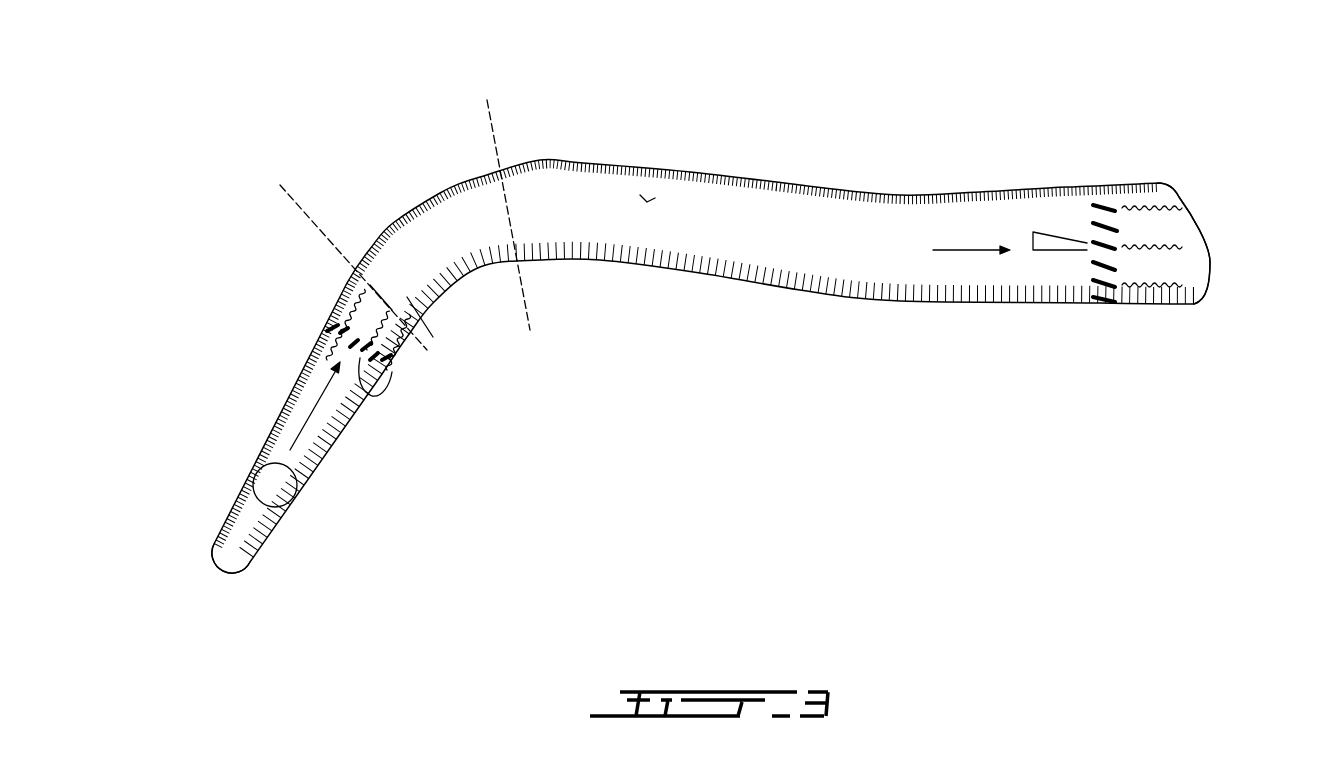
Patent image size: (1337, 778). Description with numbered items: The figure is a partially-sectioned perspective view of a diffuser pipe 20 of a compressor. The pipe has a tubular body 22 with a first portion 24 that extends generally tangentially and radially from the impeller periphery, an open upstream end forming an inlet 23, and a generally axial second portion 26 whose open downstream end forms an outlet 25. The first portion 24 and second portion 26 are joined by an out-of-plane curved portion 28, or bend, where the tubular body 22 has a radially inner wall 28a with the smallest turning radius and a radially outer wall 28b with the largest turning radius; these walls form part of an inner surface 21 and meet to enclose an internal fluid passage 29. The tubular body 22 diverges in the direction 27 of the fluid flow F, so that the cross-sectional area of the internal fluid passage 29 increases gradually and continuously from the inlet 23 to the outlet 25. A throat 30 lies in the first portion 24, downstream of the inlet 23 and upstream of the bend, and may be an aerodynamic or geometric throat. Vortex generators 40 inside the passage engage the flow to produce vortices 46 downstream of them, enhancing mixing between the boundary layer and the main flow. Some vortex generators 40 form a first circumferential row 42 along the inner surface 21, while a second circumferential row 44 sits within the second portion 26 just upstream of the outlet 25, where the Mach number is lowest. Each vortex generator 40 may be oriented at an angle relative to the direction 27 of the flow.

The diffuser pipe 20 is at (855, 145).
The inner surface 21 is at (645, 197).
The tubular body 22 is at (574, 163).
The inlet 23 is at (220, 572).
The first portion 24 is at (347, 417).
The outlet 25 is at (1210, 292).
The second portion 26 is at (815, 265).
The direction of fluid flow 27 is at (960, 250).
The curved portion 28 is at (482, 132).
The radially inner wall 28a is at (456, 270).
The radially outer wall 28b is at (468, 200).
The internal fluid passage 29 is at (760, 227).
The throat 30 is at (248, 503).
The vortex generators 40 is at (313, 353).
The first circumferential row 42 is at (318, 318).
The second circumferential row 44 is at (1115, 317).
The vortices 46 is at (340, 303).